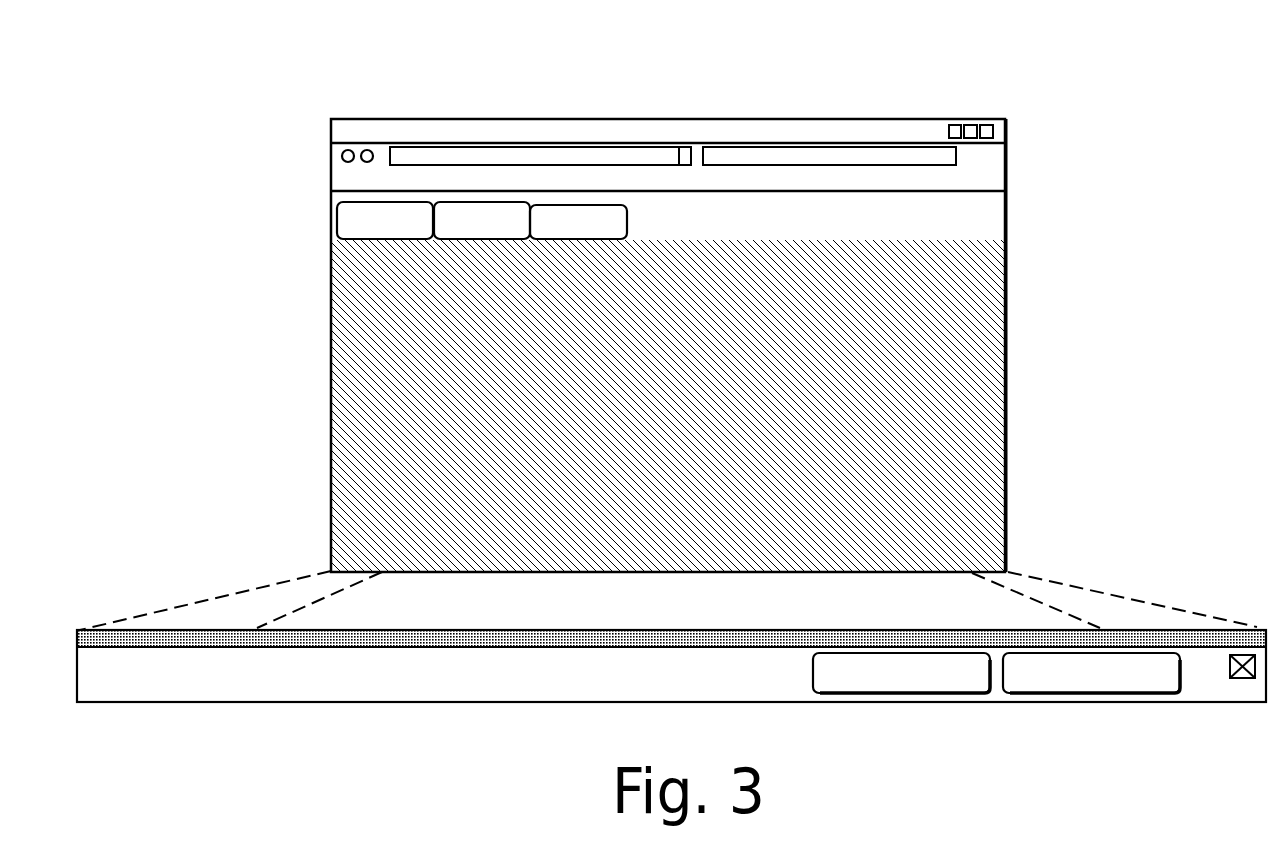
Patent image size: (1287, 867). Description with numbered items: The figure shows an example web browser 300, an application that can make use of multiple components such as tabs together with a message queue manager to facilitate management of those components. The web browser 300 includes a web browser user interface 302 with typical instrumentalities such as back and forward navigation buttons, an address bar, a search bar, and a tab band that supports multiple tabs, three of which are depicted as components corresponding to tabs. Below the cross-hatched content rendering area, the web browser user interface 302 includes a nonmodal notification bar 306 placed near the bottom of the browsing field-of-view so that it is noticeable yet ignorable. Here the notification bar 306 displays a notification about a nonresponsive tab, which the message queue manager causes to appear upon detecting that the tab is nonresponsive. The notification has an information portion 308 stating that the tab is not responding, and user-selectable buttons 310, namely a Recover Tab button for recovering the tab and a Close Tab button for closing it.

The web browser 300 is at (644, 411).
The web browser user interface 302 is at (644, 329).
The notification bar 306 is at (671, 694).
The information portion 308 is at (191, 696).
The buttons 310 is at (1187, 705).